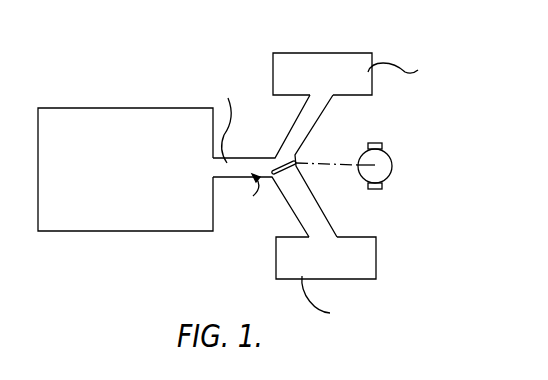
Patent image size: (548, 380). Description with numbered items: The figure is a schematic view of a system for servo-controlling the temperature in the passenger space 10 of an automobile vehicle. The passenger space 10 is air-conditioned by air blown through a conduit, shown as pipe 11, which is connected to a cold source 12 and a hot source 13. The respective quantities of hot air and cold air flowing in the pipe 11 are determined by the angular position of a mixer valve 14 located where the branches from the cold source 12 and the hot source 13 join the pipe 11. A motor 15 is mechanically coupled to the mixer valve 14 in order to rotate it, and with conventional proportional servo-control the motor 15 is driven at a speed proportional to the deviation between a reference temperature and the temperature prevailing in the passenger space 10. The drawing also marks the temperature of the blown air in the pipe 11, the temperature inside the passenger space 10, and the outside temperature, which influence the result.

The passenger space 10 is at (123, 108).
The pipe 11 is at (234, 157).
The cold source 12 is at (332, 53).
The hot source 13 is at (300, 272).
The mixer valve 14 is at (285, 166).
The motor 15 is at (393, 155).